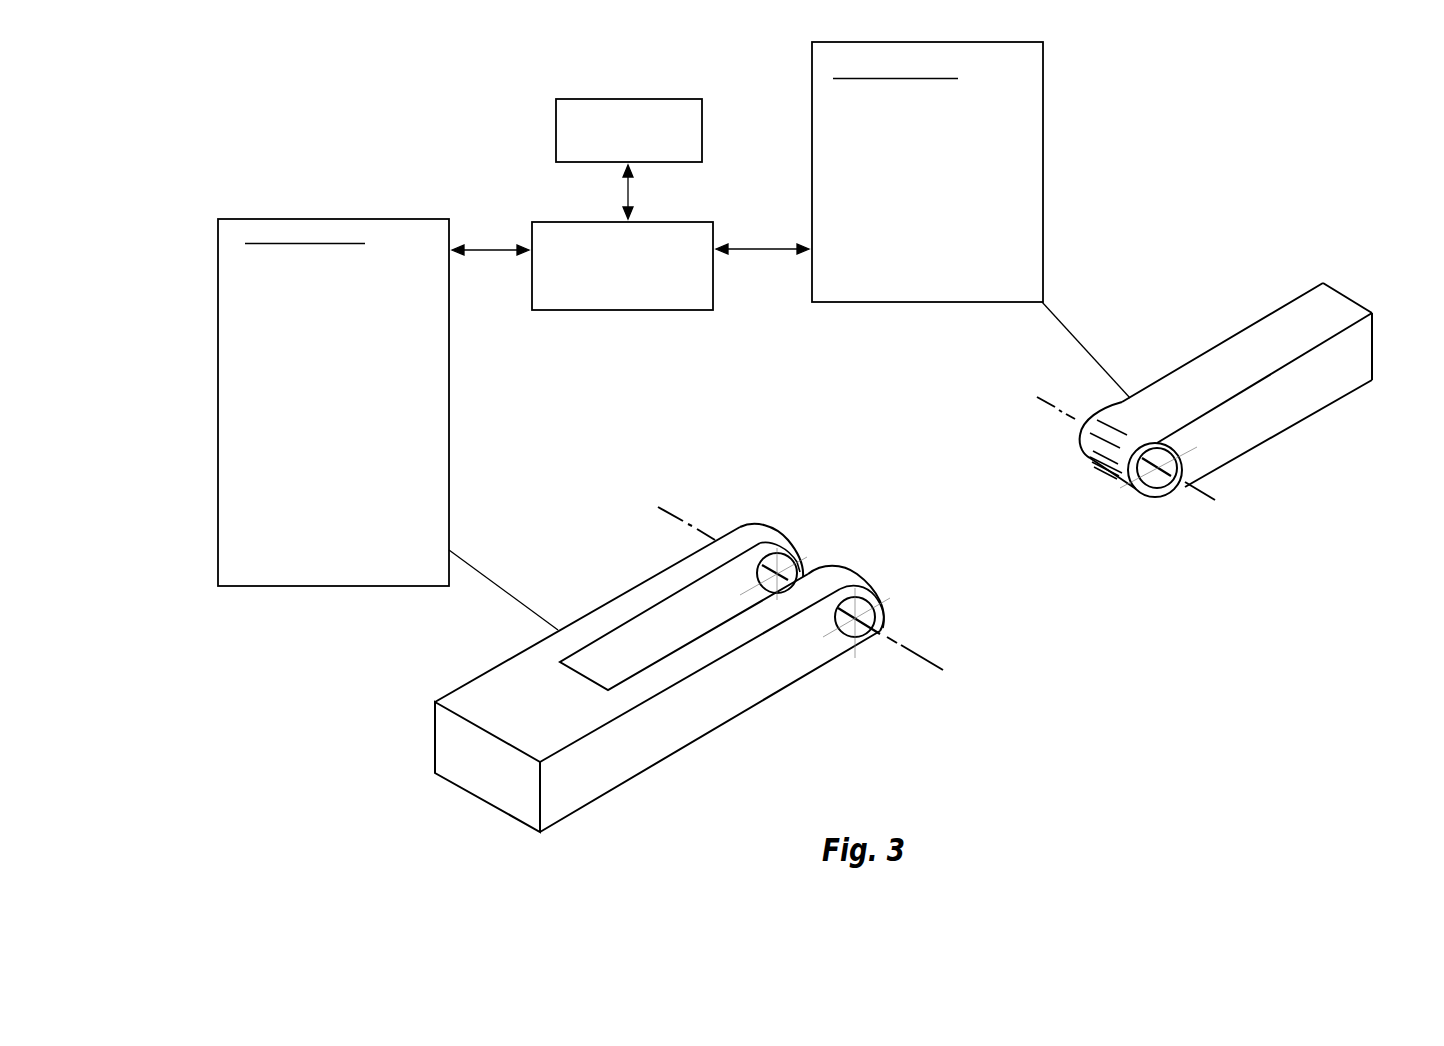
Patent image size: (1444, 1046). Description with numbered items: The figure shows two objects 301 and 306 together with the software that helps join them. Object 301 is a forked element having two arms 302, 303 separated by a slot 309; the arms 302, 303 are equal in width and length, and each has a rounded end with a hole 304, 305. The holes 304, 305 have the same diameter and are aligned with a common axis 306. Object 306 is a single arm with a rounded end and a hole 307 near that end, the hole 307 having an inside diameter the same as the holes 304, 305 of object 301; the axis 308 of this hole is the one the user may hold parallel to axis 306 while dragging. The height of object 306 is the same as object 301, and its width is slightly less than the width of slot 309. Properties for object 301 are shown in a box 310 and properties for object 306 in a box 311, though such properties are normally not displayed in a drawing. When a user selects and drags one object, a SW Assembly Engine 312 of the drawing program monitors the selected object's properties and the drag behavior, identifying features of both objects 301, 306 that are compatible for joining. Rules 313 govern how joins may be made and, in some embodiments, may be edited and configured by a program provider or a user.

The object 301 is at (518, 678).
The arm 302 is at (689, 572).
The arm 303 is at (757, 662).
The hole 304 is at (790, 558).
The hole 305 is at (866, 634).
The object 306 is at (935, 660).
The hole 307 is at (1163, 480).
The axis 308 is at (1210, 490).
The slot 309 is at (655, 637).
The box 310 is at (332, 218).
The box 311 is at (813, 137).
The SW Assembly Engine 312 is at (624, 311).
The rules 313 is at (556, 140).